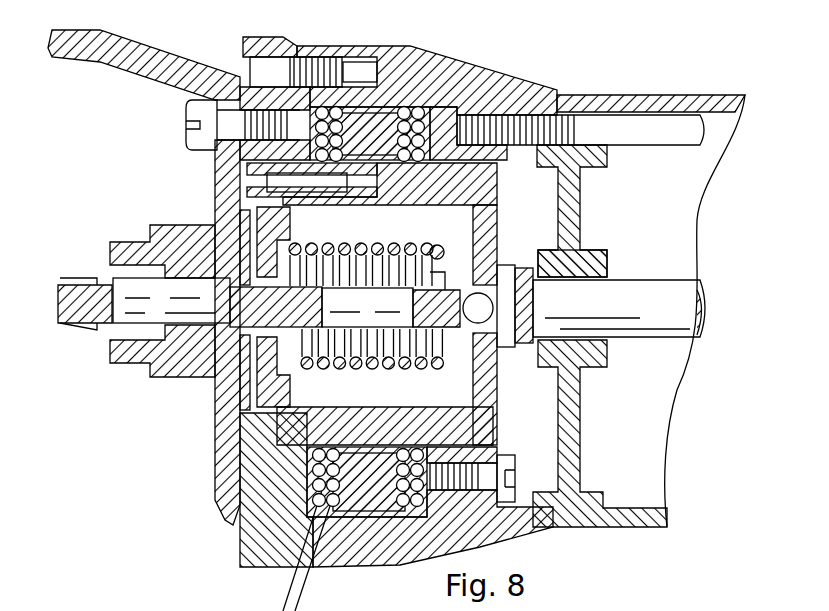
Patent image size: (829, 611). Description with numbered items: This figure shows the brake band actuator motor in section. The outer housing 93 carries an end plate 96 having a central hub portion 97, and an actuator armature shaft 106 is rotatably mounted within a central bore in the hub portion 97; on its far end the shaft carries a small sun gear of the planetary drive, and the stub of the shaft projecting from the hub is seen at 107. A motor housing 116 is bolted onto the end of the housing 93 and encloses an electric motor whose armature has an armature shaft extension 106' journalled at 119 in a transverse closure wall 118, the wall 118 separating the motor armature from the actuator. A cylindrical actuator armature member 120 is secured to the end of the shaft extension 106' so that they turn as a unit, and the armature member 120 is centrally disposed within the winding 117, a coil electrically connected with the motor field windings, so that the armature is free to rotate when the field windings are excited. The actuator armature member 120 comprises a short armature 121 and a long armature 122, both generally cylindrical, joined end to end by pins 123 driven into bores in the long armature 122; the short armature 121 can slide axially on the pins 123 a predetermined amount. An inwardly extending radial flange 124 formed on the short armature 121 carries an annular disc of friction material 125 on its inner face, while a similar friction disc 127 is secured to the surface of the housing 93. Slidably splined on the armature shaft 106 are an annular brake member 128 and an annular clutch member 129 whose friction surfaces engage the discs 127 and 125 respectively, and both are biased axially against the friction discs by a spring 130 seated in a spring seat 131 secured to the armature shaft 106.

The outer housing 93 is at (110, 42).
The end plate 96 is at (218, 166).
The hub portion 97 is at (150, 236).
The actuator armature shaft 106 is at (367, 307).
The armature shaft extension 106' is at (648, 307).
The shaft end 107 is at (76, 282).
The motor housing 116 is at (480, 70).
The winding 117 is at (393, 95).
The transverse closure wall 118 is at (580, 203).
The journal 119 is at (610, 253).
The actuator armature member 120 is at (503, 210).
The short armature 121 is at (247, 433).
The long armature 122 is at (460, 187).
The pins 123 is at (355, 242).
The radial flange 124 is at (233, 390).
The friction material 125 is at (285, 226).
The friction material disc 127 is at (232, 213).
The annular brake member 128 is at (215, 294).
The annular clutch member 129 is at (300, 300).
The spring 130 is at (398, 250).
The spring seat 131 is at (427, 268).